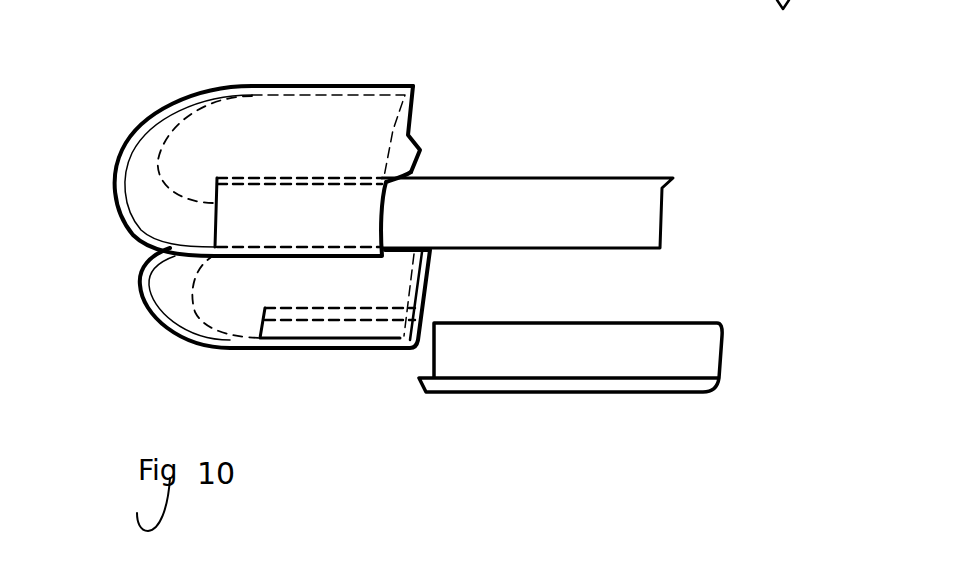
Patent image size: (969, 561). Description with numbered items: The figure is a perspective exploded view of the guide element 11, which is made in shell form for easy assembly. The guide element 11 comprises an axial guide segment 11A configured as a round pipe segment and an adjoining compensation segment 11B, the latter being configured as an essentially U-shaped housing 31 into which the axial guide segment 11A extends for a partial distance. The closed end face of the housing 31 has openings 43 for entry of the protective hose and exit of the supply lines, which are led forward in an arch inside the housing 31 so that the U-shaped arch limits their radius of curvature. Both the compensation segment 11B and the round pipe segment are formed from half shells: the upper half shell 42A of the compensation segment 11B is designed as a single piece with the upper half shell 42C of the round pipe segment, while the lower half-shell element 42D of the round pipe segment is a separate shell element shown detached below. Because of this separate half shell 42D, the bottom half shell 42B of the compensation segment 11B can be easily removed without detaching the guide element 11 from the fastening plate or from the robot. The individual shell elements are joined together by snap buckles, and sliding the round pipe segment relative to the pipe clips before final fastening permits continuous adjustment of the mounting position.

The guide element 11 is at (763, 236).
The axial guide segment 11A is at (580, 139).
The compensation segment 11B is at (323, 375).
The housing 31 is at (100, 137).
The upper half shell 42A is at (303, 118).
The bottom half shell 42B is at (183, 303).
The upper half shell of the round pipe segment 42C is at (588, 200).
The lower half-shell element 42D is at (603, 390).
The openings 43 is at (416, 113).